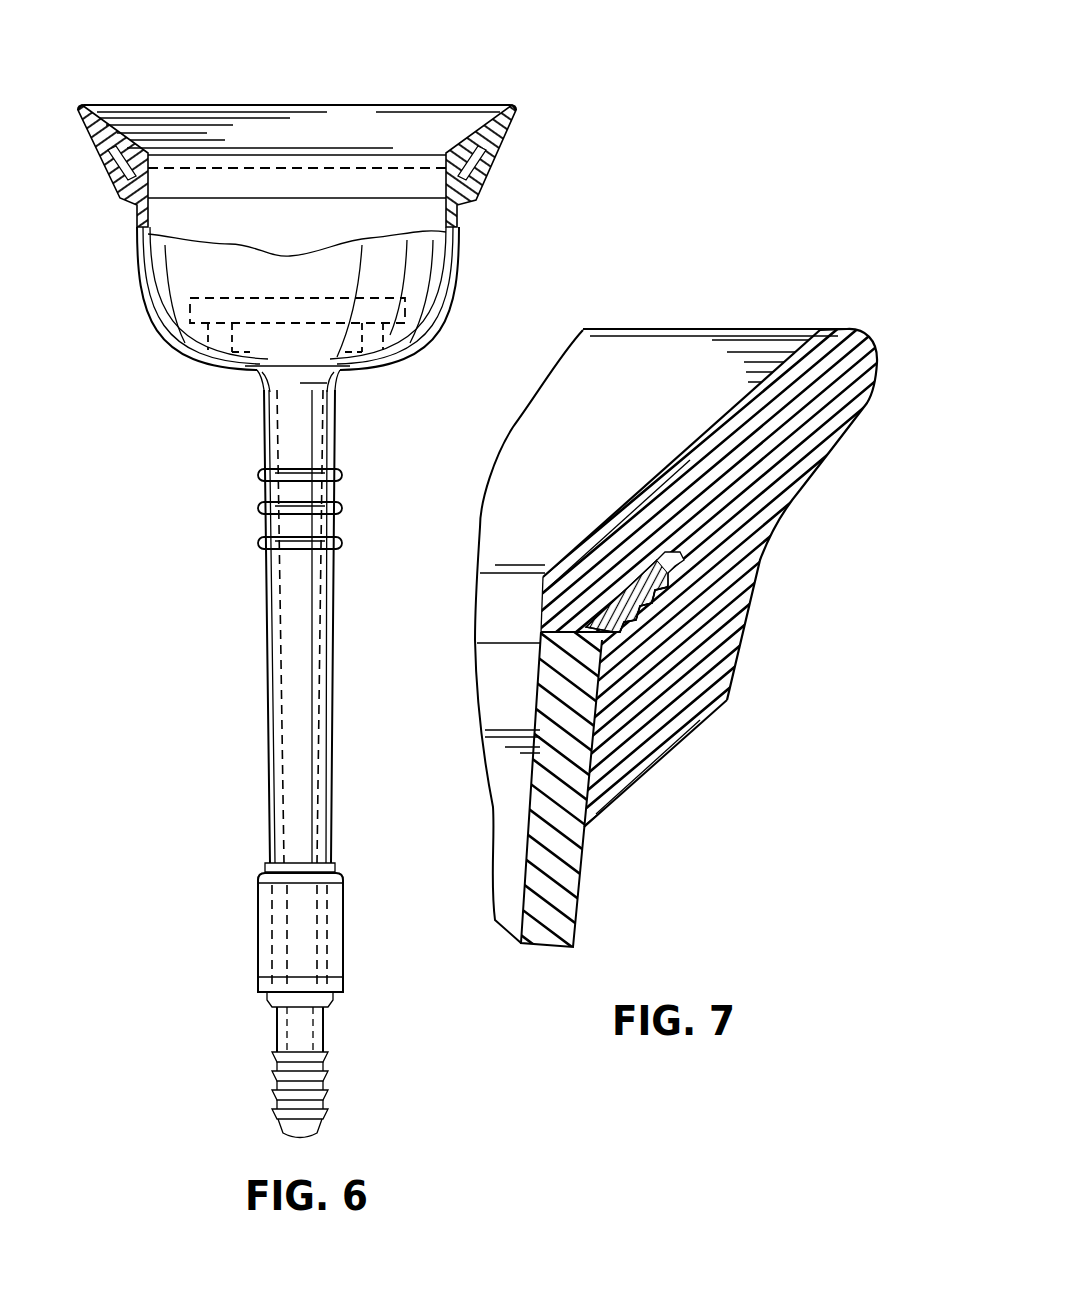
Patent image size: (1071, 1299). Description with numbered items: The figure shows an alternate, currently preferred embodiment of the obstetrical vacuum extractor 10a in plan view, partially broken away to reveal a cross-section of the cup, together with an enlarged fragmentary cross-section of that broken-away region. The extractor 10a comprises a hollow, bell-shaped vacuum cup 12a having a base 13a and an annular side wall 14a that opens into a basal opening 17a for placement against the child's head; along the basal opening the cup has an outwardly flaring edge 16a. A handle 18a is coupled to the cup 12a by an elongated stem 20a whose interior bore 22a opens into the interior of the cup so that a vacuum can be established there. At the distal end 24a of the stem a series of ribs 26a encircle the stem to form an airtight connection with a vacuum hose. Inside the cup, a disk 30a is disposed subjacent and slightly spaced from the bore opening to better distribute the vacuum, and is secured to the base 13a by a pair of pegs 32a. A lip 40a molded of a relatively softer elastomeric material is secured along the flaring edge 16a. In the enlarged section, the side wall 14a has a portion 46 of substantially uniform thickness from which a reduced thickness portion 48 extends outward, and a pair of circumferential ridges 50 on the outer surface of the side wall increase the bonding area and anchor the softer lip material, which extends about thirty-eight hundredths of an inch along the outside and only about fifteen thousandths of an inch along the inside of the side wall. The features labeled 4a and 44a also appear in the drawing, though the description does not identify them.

In FIG. 6, the obstetrical vacuum extractor 10a is at (156, 543).
In FIG. 6, the flange 4a is at (505, 143).
In FIG. 6, the vacuum cup 12a is at (146, 312).
In FIG. 6, the base 13a is at (220, 372).
In FIG. 6, the side wall 14a is at (458, 248).
In FIG. 7, the side wall 14a is at (580, 914).
In FIG. 7, the outwardly flaring edge 16a is at (616, 628).
In FIG. 6, the basal opening 17a is at (468, 163).
In FIG. 7, the basal opening 17a is at (650, 560).
In FIG. 6, the handle 18a is at (337, 933).
In FIG. 6, the elongated stem 20a is at (270, 722).
In FIG. 6, the interior bore 22a is at (283, 673).
In FIG. 6, the distal end 24a is at (290, 1138).
In FIG. 6, the ribs 26a is at (325, 1096).
In FIG. 6, the disk 30a is at (449, 293).
In FIG. 6, the pegs 32a is at (388, 325).
In FIG. 7, the lip 40a is at (818, 468).
In FIG. 7, the bead 44a is at (668, 572).
In FIG. 7, the portion of substantially uniform thickness 46 is at (600, 660).
In FIG. 7, the reduced thickness portion 48 is at (676, 562).
In FIG. 6, the ridges 50 is at (104, 170).
In FIG. 7, the ridges 50 is at (665, 590).